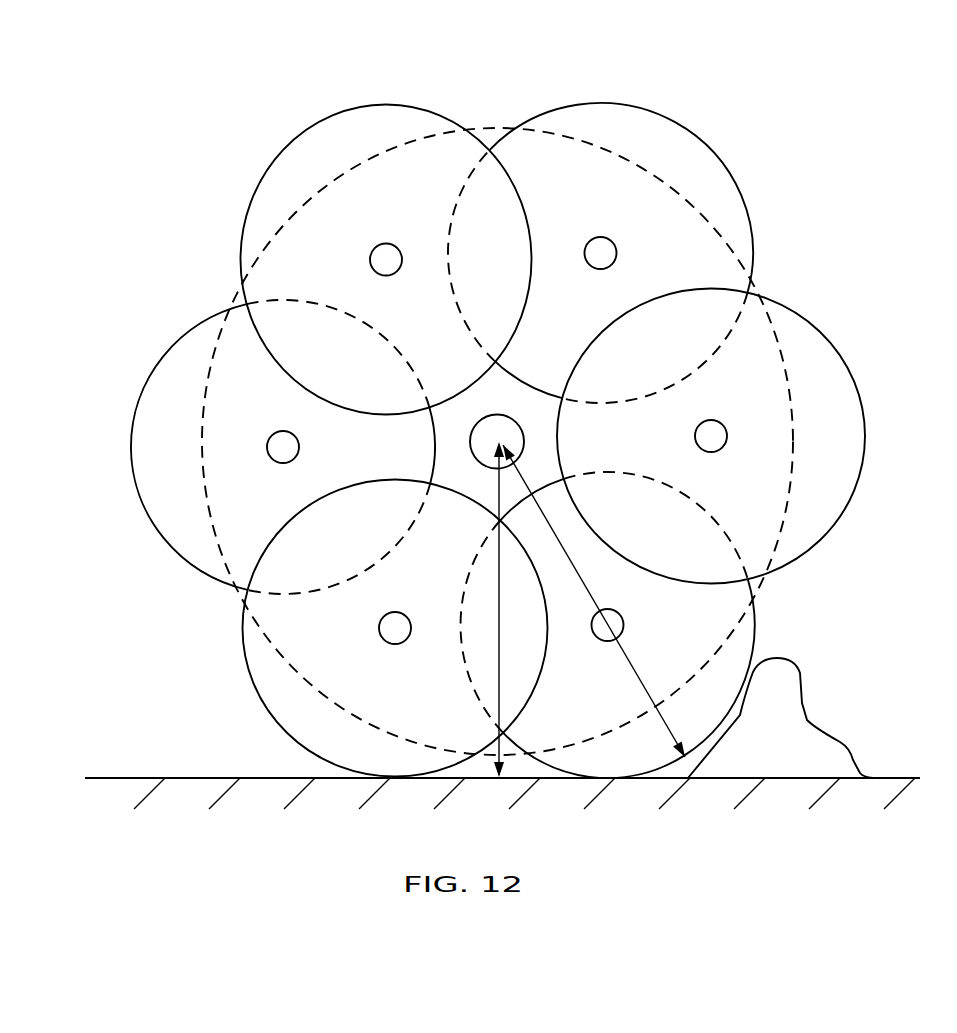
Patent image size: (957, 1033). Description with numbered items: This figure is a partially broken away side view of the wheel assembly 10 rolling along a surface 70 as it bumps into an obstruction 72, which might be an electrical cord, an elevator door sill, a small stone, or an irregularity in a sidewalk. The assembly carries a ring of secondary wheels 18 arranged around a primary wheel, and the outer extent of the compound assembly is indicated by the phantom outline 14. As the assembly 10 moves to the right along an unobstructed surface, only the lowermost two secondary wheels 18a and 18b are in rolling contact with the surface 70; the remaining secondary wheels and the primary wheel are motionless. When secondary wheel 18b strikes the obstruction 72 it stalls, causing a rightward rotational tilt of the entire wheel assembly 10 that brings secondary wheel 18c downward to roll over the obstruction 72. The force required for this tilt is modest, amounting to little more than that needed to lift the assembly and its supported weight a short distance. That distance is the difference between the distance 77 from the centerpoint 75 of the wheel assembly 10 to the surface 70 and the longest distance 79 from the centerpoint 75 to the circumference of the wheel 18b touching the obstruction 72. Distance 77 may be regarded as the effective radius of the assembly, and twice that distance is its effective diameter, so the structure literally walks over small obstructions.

The wheel assembly 10 is at (187, 259).
The outer envelope of wheel assembly 14 is at (493, 143).
The secondary wheel 18 is at (671, 141).
The secondary wheel 18a is at (270, 687).
The secondary wheel 18b is at (747, 627).
The secondary wheel 18c is at (855, 445).
The surface 70 is at (480, 840).
The obstruction 72 is at (795, 720).
The centerpoint 75 is at (500, 436).
The distance 77 is at (497, 556).
The longest distance 79 is at (592, 592).